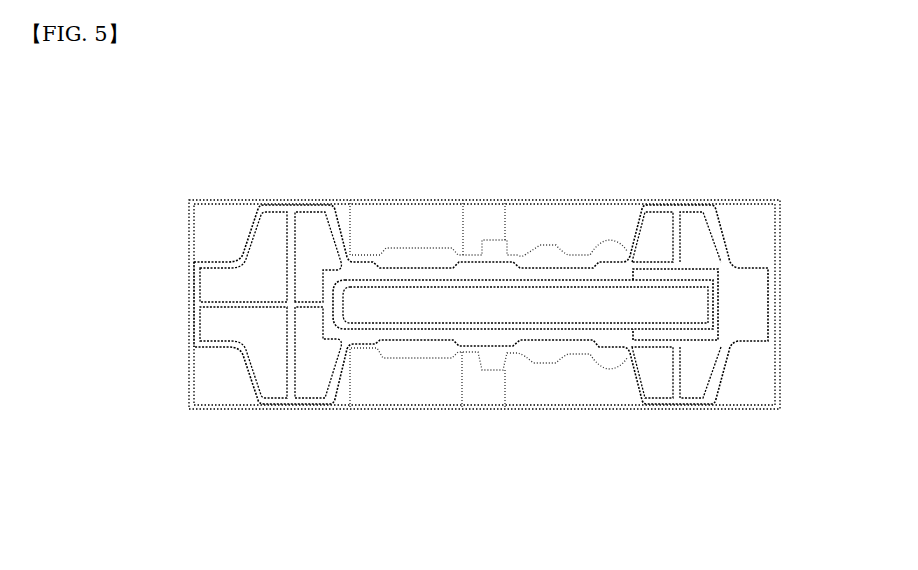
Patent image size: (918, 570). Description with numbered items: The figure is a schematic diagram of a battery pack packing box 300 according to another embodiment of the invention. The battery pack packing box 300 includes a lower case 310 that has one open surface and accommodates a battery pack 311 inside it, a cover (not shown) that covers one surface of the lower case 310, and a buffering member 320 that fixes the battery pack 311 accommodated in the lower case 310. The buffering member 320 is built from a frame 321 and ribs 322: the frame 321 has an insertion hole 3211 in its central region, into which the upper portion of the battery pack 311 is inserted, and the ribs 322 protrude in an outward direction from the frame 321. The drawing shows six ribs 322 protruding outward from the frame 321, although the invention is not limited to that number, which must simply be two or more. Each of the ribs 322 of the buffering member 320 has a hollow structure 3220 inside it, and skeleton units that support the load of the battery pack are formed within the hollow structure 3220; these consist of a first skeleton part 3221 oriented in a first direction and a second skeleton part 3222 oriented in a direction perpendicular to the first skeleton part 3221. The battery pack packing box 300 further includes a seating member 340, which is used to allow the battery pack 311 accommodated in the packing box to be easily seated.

The battery pack packing box 300 is at (140, 121).
The lower case 310 is at (781, 220).
The battery pack 311 is at (688, 308).
The buffering member 320 is at (443, 374).
The frame 321 is at (499, 370).
The ribs 322 is at (222, 353).
The insertion hole 3211 is at (684, 338).
The hollow structure 3220 is at (233, 277).
The first skeleton part 3221 is at (205, 306).
The second skeleton part 3222 is at (288, 238).
The seating member 340 is at (477, 217).